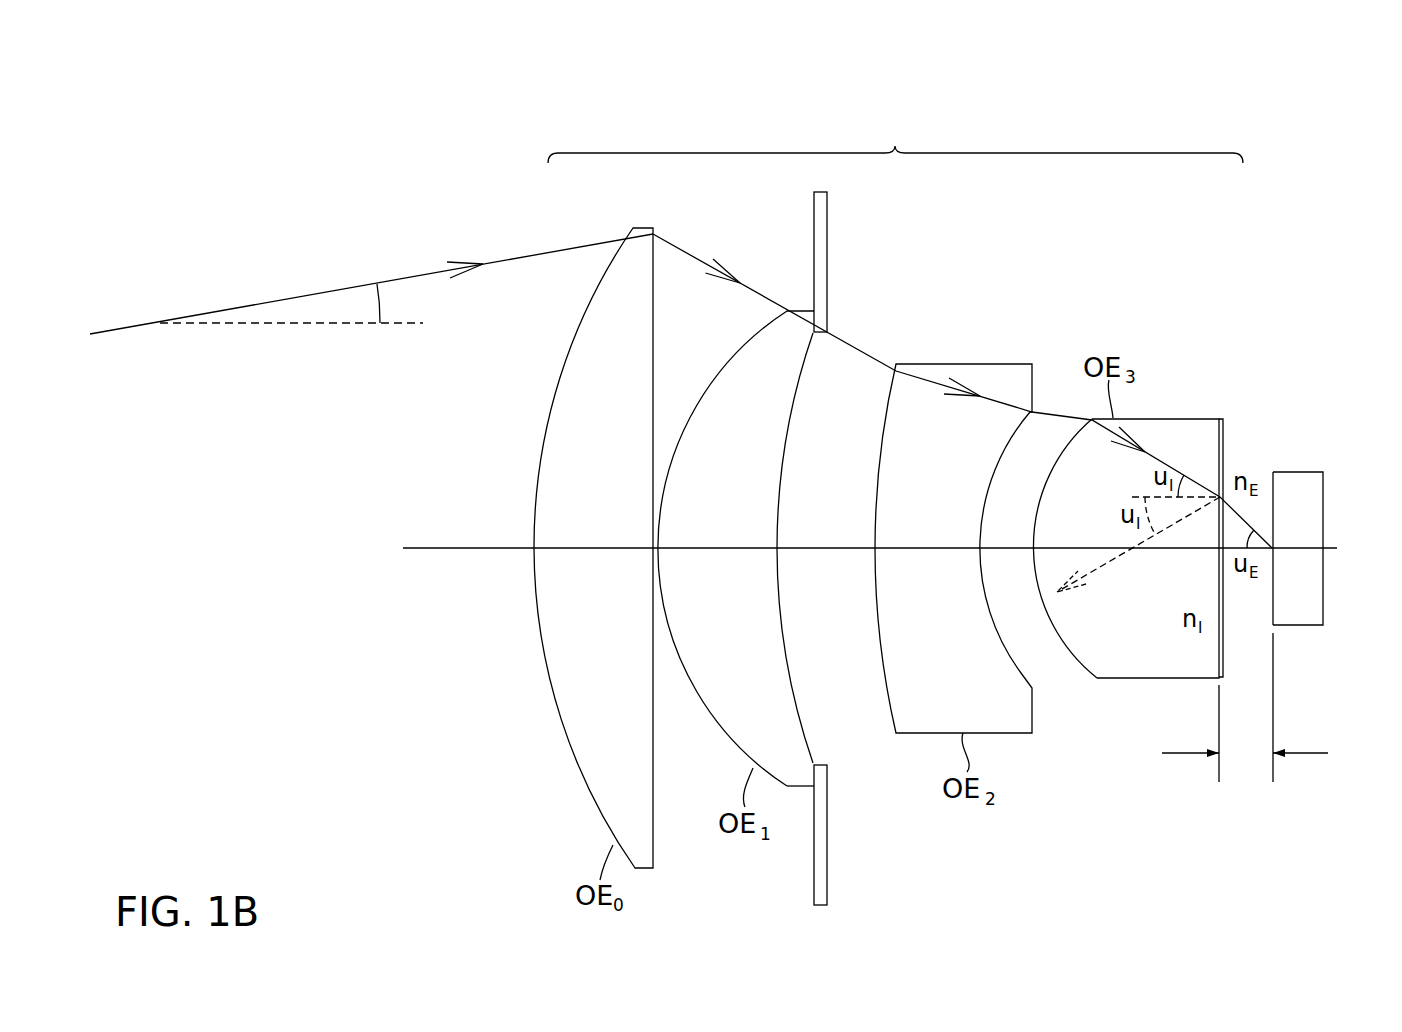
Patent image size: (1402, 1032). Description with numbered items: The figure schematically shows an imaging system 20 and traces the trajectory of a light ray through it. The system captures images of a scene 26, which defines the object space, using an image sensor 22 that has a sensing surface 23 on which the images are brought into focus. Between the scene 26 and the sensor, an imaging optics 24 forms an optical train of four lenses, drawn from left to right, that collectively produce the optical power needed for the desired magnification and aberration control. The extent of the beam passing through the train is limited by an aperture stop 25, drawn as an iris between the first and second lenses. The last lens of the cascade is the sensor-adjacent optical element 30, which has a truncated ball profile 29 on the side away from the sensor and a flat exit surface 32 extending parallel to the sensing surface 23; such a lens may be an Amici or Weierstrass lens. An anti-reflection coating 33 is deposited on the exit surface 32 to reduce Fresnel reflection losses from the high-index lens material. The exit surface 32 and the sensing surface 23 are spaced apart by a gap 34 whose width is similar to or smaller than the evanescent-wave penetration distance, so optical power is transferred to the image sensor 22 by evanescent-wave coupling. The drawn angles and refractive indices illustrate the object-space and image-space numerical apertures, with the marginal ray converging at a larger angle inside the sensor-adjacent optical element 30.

The imaging system 20 is at (1236, 95).
The image sensor 22 is at (1305, 502).
The sensing surface 23 is at (1270, 484).
The imaging optics 24 is at (895, 139).
The aperture stop 25 is at (827, 203).
The scene 26 is at (192, 610).
The truncated ball profile 29 is at (1080, 660).
The sensor-adjacent optical element 30 is at (1135, 678).
The exit surface 32 is at (1223, 427).
The anti-reflection coating 33 is at (1222, 660).
The gap 34 is at (1262, 610).